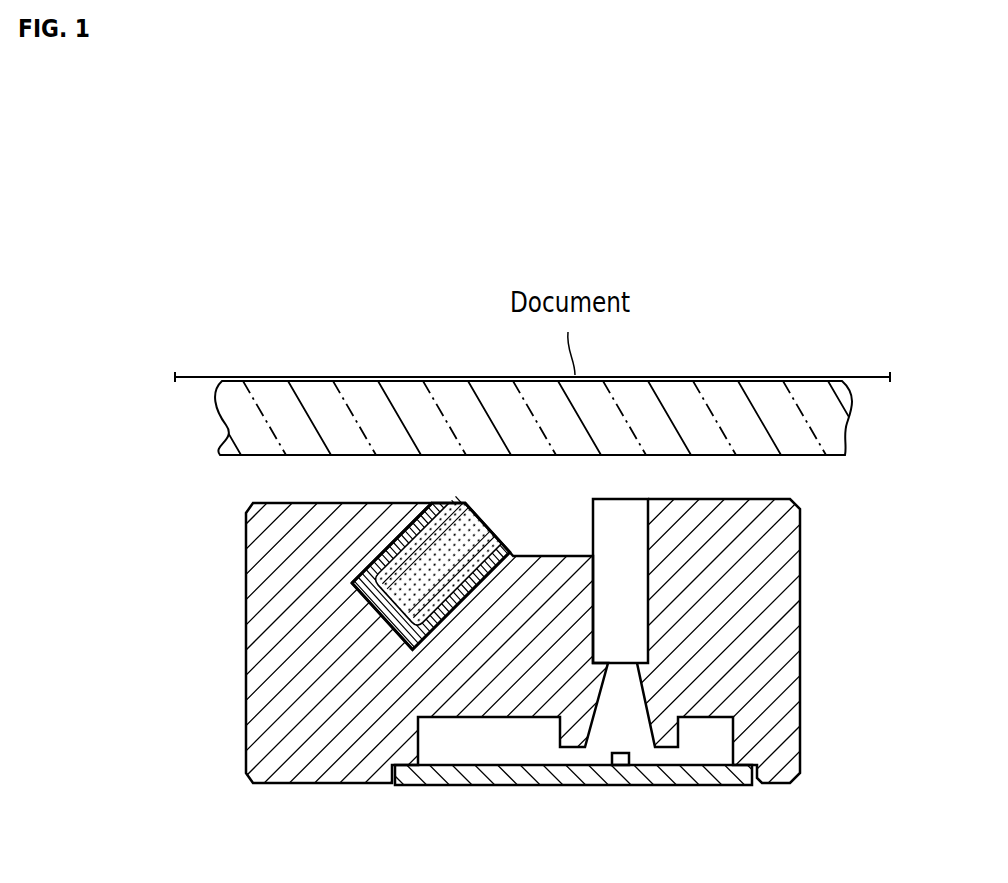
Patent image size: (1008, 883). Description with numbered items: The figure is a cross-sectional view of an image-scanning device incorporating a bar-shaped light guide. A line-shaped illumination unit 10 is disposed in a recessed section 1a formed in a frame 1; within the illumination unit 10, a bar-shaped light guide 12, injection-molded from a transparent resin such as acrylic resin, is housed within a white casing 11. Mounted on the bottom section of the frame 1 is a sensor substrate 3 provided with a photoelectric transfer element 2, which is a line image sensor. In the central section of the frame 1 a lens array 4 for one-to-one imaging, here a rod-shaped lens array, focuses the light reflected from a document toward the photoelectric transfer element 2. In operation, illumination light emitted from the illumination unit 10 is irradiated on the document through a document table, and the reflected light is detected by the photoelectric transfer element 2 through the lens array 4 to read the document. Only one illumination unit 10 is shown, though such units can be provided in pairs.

The frame 1 is at (772, 595).
The recessed section 1a is at (370, 602).
The photoelectric transfer element 2 is at (618, 767).
The sensor substrate 3 is at (480, 777).
The lens array 4 is at (633, 525).
The illumination unit 10 is at (355, 551).
The casing 11 is at (435, 503).
The bar-shaped light guide 12 is at (397, 548).